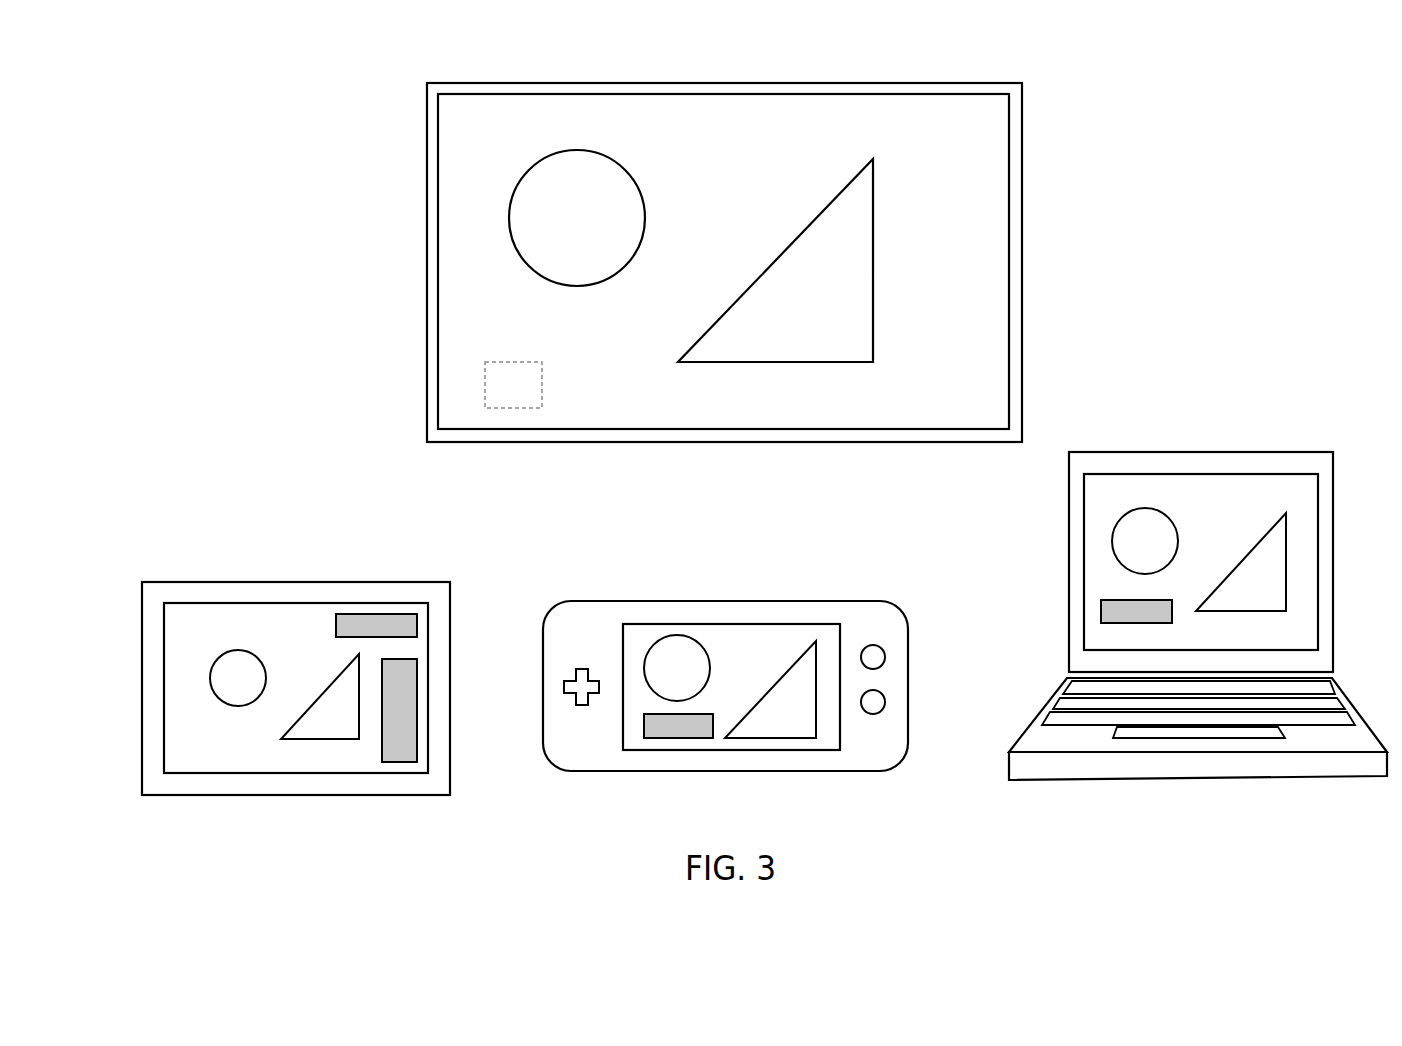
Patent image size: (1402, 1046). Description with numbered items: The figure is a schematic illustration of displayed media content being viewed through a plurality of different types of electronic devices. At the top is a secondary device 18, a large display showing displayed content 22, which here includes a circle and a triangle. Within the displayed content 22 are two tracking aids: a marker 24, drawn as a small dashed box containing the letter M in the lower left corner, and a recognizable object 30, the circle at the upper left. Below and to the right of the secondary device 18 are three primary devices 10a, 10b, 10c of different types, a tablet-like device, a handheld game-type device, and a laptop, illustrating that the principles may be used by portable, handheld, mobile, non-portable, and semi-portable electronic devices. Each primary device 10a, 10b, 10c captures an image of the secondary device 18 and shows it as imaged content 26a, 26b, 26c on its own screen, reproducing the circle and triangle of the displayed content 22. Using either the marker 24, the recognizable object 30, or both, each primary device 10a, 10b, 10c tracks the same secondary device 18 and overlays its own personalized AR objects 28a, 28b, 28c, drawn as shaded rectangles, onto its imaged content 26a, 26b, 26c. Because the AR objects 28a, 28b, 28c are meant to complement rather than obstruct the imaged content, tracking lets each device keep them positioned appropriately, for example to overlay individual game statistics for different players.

The secondary device 18 is at (1022, 134).
The displayed content 22 is at (996, 283).
The marker 24 is at (484, 376).
The recognizable object 30 is at (508, 218).
The primary device 10a is at (190, 581).
The imaged content 26a is at (233, 615).
The AR objects 28a is at (405, 627).
The primary device 10b is at (628, 601).
The imaged content 26b is at (750, 636).
The AR objects 28b is at (651, 765).
The primary device 10c is at (1205, 451).
The imaged content 26c is at (1102, 486).
The AR objects 28c is at (1101, 612).